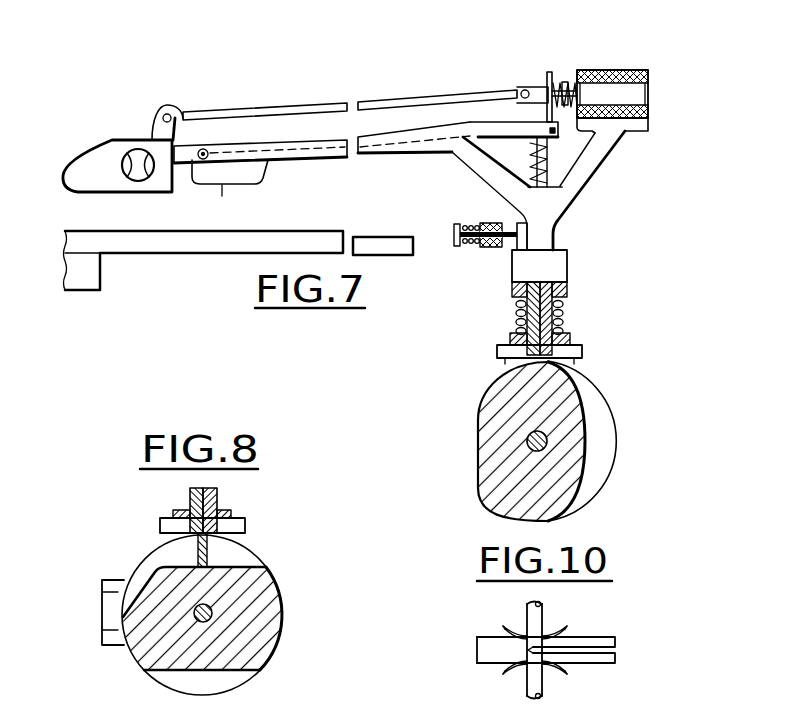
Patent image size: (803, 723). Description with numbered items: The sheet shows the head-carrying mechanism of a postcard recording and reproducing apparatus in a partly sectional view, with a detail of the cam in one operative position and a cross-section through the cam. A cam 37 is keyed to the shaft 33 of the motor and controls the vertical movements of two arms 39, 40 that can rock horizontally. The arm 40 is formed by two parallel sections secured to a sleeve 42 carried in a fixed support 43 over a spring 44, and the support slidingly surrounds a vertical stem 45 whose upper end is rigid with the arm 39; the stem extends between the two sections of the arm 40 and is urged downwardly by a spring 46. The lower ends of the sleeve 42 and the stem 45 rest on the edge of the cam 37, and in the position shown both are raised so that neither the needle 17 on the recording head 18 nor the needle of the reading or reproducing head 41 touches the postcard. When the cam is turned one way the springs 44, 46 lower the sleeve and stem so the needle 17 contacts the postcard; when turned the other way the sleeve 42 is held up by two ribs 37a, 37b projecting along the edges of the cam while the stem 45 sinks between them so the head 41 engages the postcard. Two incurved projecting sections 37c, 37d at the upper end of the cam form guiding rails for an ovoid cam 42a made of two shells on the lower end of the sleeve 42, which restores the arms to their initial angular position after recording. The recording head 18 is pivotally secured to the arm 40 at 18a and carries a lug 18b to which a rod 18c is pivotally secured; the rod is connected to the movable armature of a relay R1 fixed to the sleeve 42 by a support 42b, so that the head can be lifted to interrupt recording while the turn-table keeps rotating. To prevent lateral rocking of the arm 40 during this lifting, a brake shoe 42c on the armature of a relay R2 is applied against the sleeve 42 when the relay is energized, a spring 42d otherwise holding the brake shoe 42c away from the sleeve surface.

In FIG. 7, the needle 17 is at (130, 191).
In FIG. 7, the recording head 18 is at (149, 103).
In FIG. 7, the pivot 18a is at (200, 159).
In FIG. 7, the lug 18b is at (163, 116).
In FIG. 7, the rod 18c is at (384, 102).
In FIG. 7, the arm 39 is at (490, 124).
In FIG. 7, the arm 40 is at (300, 142).
In FIG. 7, the reading or reproducing head 41 is at (258, 175).
In FIG. 7, the sleeve 42 is at (549, 184).
In FIG. 8, the sleeve 42 is at (218, 495).
In FIG. 7, the ovoid cam 42a is at (503, 353).
In FIG. 8, the ovoid cam 42a is at (246, 523).
In FIG. 7, the support 42b is at (570, 190).
In FIG. 7, the brake shoe 42c is at (517, 228).
In FIG. 7, the spring 42d is at (465, 244).
In FIG. 7, the fixed support 43 is at (553, 270).
In FIG. 7, the spring 44 is at (557, 332).
In FIG. 7, the vertical stem 45 is at (518, 327).
In FIG. 8, the vertical stem 45 is at (199, 548).
In FIG. 7, the spring 46 is at (540, 176).
In FIG. 7, the relay R1 is at (648, 78).
In FIG. 7, the relay R2 is at (469, 256).
In FIG. 7, the shaft 33 is at (527, 441).
In FIG. 7, the cam 37 is at (533, 439).
In FIG. 10, the rib 37a is at (598, 662).
In FIG. 7, the rib 37b is at (587, 376).
In FIG. 8, the rib 37b is at (244, 557).
In FIG. 10, the rib 37b is at (601, 636).
In FIG. 8, the projecting section 37c is at (115, 644).
In FIG. 10, the projecting section 37c is at (511, 626).
In FIG. 10, the projecting section 37d is at (508, 668).